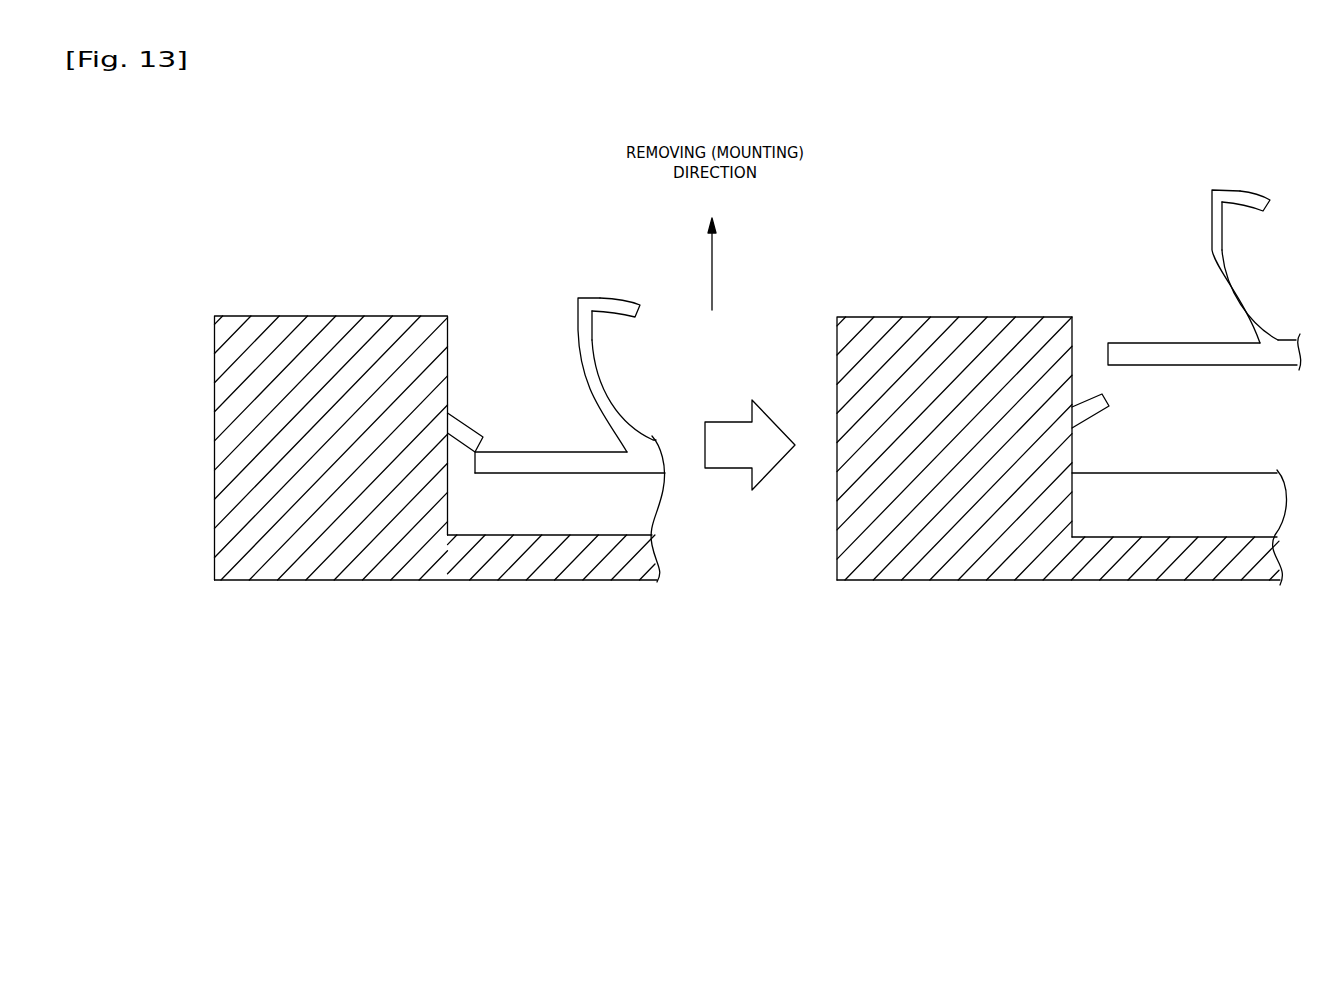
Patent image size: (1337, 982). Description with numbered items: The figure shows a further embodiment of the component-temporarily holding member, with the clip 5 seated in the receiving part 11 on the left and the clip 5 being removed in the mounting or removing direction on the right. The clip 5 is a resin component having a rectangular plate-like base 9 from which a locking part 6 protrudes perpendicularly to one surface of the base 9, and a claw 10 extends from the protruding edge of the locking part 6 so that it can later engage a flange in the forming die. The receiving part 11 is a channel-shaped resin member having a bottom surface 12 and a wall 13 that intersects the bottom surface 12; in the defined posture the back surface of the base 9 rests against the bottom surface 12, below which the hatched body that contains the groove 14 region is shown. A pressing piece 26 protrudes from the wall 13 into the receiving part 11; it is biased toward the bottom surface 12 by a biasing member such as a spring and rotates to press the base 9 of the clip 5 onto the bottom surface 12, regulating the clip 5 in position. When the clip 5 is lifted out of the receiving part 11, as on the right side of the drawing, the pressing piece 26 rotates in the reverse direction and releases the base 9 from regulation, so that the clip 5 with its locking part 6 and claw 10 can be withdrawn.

The clip 5 is at (890, 297).
The locking part 6 is at (583, 298).
The base 9 is at (545, 452).
The claw 10 is at (637, 312).
The receiving part 11 is at (493, 300).
The bottom surface 12 is at (530, 473).
The wall 13 is at (357, 316).
The groove 14 is at (585, 537).
The pressing piece 26 is at (463, 420).